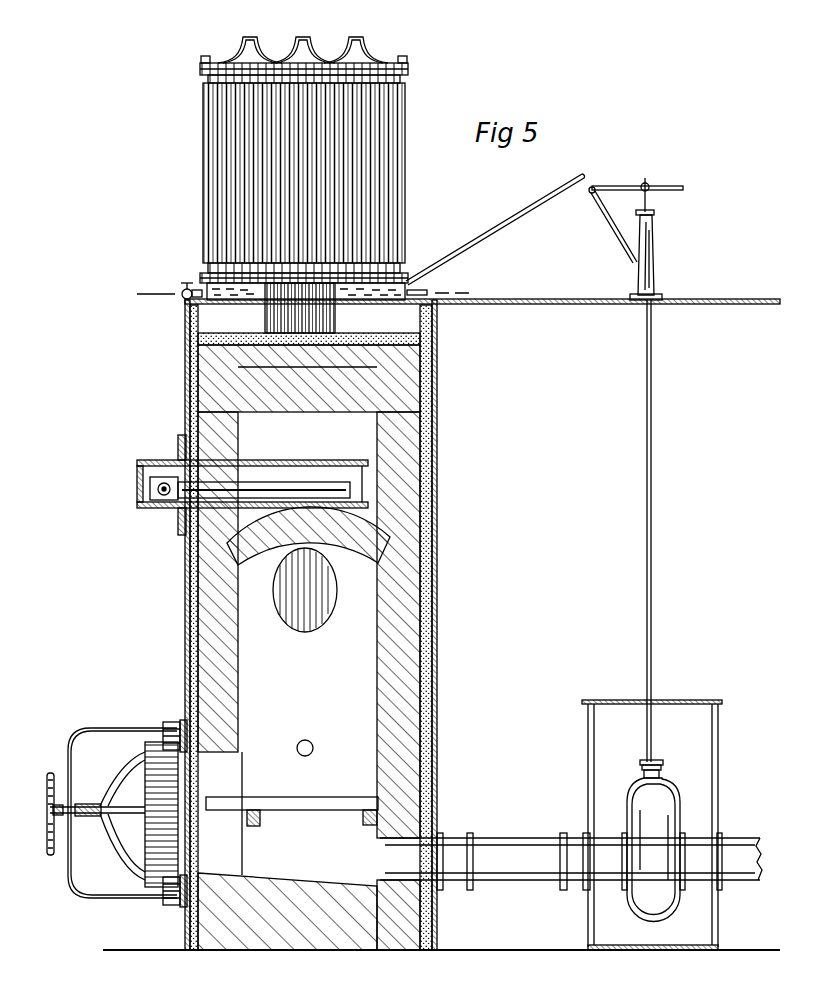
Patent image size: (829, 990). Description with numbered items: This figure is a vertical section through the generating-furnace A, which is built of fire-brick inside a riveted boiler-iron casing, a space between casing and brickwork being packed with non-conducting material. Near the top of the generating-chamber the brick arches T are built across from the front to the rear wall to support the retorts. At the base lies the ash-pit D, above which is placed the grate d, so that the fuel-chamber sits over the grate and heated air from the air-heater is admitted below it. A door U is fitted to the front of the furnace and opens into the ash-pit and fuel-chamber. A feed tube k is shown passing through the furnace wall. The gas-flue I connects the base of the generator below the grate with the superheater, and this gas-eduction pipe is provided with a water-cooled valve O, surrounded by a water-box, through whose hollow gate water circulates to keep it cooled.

The generating-furnace A is at (296, 625).
The feed tube with screw k is at (252, 485).
The brick arches T is at (316, 590).
The grate d is at (292, 798).
The ash-pit D is at (282, 851).
The doors U is at (117, 813).
The gas-flue I is at (571, 871).
The water-cooled valve O is at (663, 611).